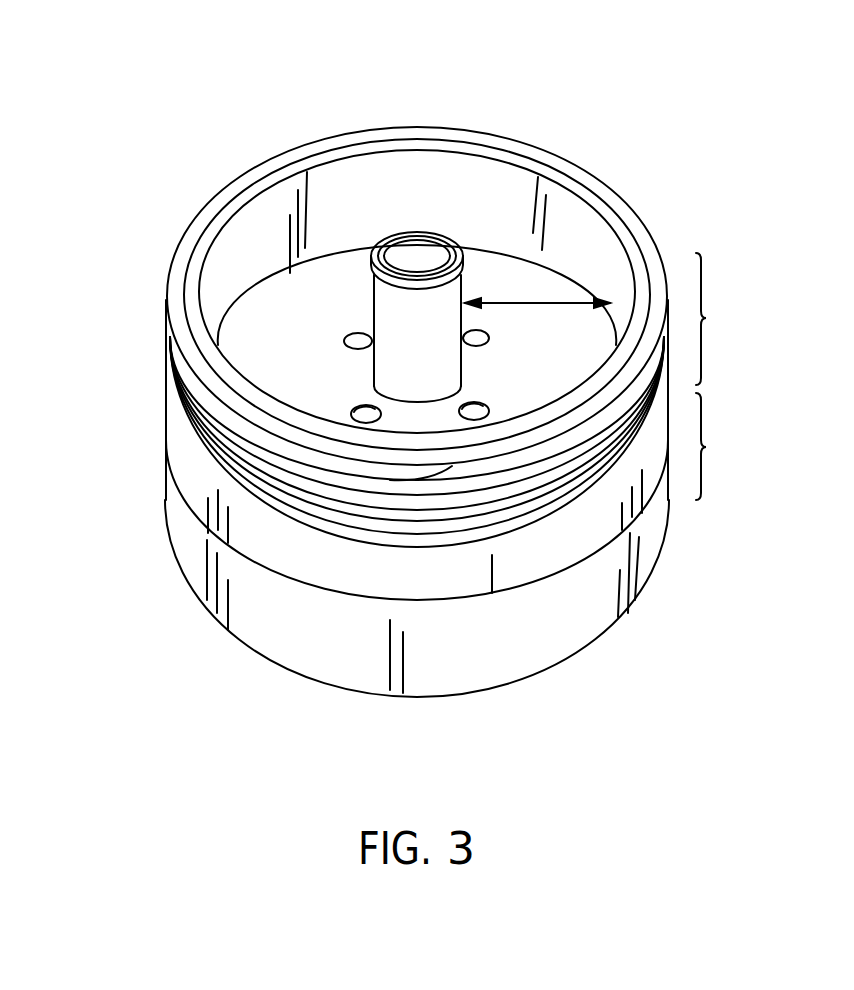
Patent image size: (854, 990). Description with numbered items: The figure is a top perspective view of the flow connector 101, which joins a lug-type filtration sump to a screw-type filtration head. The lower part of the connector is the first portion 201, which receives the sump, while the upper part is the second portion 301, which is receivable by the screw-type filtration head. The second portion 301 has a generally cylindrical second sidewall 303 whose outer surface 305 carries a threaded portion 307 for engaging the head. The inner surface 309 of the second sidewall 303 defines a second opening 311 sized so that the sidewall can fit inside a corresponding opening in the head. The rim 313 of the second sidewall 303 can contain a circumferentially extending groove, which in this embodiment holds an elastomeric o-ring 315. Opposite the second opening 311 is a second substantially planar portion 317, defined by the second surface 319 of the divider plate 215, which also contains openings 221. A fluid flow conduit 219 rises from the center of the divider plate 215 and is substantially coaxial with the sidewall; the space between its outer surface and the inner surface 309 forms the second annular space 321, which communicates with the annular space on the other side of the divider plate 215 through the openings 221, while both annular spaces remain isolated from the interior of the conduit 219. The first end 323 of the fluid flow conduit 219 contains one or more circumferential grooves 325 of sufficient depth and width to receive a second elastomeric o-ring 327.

The flow connector 101 is at (720, 179).
The first portion 201 is at (456, 545).
The second portion 301 is at (721, 319).
The generally cylindrical second sidewall 303 is at (173, 313).
The outer surface 305 is at (197, 447).
The threaded portion 307 is at (252, 460).
The inner surface 309 is at (556, 228).
The second opening 311 is at (265, 245).
The rim 313 is at (180, 280).
The elastomeric o-ring 315 is at (273, 181).
The second substantially planar portion 317 is at (492, 275).
The second surface 319 is at (347, 277).
The second annular space 321 is at (570, 300).
The first end 323 is at (450, 310).
The circumferential grooves 325 is at (388, 292).
The second elastomeric o-ring 327 is at (410, 293).
The fluid flow conduit 219 is at (416, 232).
The openings 221 is at (367, 417).
The divider plate 215 is at (523, 373).